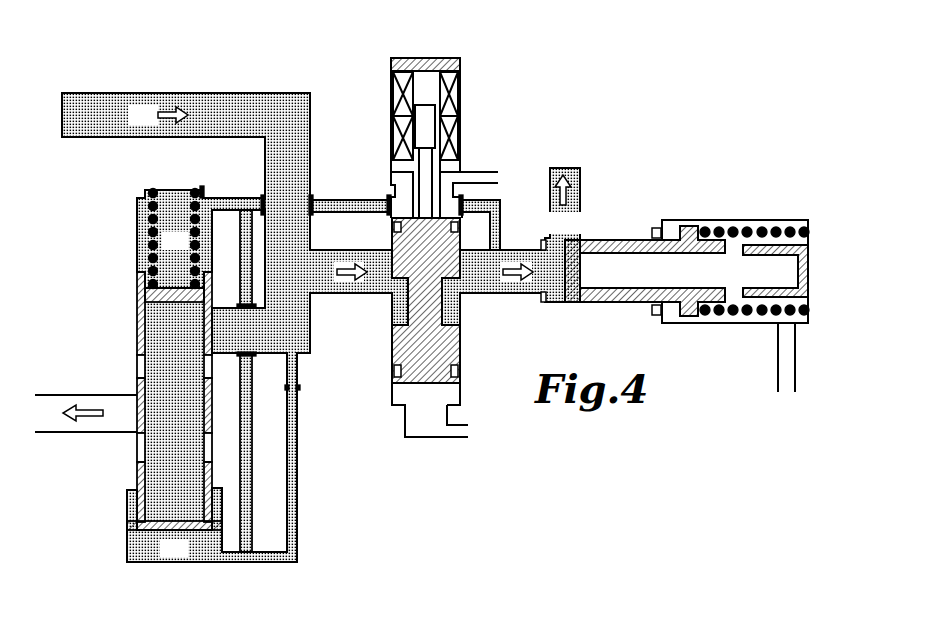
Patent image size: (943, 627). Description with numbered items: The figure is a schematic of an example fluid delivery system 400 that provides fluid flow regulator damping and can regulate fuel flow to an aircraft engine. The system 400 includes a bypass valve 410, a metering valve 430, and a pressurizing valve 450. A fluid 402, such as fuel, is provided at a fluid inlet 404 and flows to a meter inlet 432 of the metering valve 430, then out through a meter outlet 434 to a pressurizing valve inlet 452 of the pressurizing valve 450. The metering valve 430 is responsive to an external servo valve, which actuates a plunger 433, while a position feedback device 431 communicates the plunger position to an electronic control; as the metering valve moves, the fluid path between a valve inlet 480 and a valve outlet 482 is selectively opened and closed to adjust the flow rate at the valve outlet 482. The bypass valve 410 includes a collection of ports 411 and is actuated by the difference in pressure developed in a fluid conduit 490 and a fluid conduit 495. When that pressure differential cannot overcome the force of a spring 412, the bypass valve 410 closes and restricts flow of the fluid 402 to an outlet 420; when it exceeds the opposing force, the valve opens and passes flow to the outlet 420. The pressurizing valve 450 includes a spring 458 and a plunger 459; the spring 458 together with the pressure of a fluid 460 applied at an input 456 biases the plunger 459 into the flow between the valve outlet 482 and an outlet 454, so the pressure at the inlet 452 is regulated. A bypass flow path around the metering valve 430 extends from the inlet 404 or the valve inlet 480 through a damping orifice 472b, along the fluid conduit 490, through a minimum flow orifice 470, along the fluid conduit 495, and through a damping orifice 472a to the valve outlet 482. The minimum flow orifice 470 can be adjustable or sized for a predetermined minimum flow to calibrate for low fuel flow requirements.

The fluid delivery system 400 is at (282, 58).
The fluid 402 is at (90, 108).
The fluid inlet 404 is at (134, 96).
The bypass valve 410 is at (104, 278).
The ports 411 is at (137, 448).
The spring 412 is at (137, 240).
The outlet 420 is at (95, 395).
The metering valve 430 is at (480, 88).
The position feedback device 431 is at (430, 128).
The meter inlet 432 is at (392, 308).
The plunger 433 is at (460, 338).
The meter outlet 434 is at (460, 308).
The pressurizing valve 450 is at (783, 210).
The pressurizing valve inlet 452 is at (553, 268).
The outlet 454 is at (580, 175).
The input 456 is at (778, 325).
The spring 458 is at (735, 229).
The plunger 459 is at (607, 302).
The fluid 460 is at (780, 368).
The minimum flow orifice 470 is at (235, 270).
The damping orifice 472a is at (350, 200).
The damping orifice 472b is at (298, 387).
The valve inlet 480 is at (350, 250).
The valve outlet 482 is at (515, 250).
The fluid conduit 490 is at (297, 525).
The fluid conduit 495 is at (215, 197).